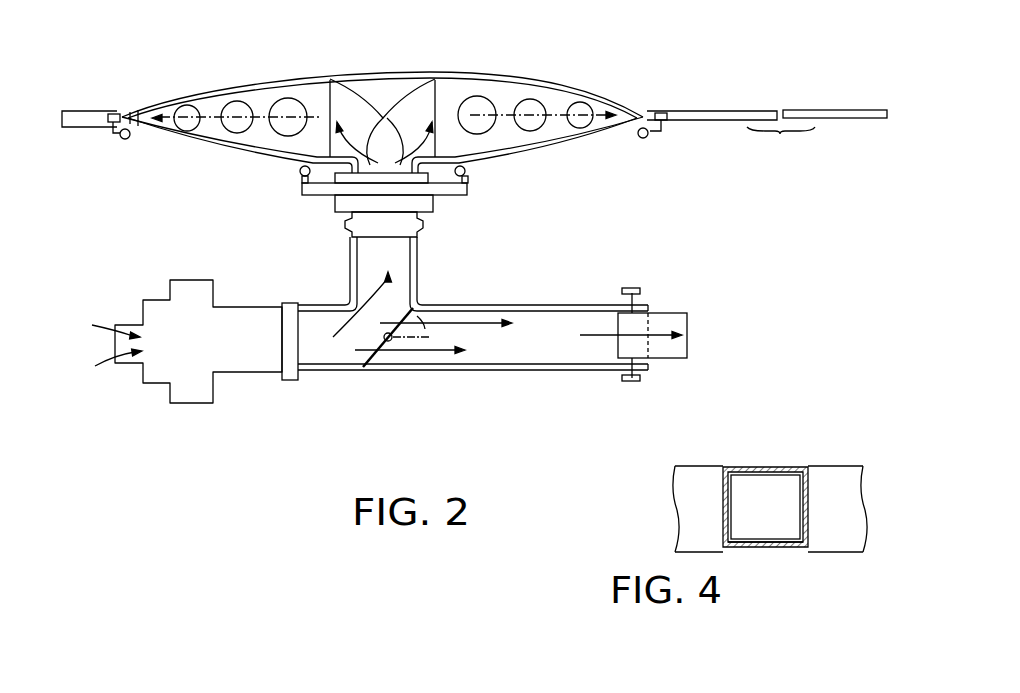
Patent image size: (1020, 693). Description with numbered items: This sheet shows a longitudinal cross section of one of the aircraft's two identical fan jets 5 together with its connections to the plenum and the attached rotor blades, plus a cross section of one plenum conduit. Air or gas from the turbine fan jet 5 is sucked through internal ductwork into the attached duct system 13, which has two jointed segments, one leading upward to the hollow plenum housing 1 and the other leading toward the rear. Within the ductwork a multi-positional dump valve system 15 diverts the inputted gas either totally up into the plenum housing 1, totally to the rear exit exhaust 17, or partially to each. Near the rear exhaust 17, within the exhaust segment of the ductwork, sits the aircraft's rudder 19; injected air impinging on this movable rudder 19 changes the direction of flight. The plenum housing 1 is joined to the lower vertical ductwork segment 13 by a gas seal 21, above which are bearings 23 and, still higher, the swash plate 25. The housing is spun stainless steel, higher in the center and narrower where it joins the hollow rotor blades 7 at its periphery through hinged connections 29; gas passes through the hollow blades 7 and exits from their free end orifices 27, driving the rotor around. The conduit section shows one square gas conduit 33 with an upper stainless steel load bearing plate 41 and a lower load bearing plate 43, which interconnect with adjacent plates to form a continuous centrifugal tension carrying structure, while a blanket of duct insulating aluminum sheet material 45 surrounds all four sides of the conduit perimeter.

In FIG. 2, the plenum housing 1 is at (489, 68).
In FIG. 2, the fan jet 5 is at (229, 322).
In FIG. 2, the rotor blade 7 is at (88, 112).
In FIG. 2, the duct system 13 is at (417, 285).
In FIG. 2, the dump valve system 15 is at (400, 347).
In FIG. 2, the rear exhaust 17 is at (687, 342).
In FIG. 2, the rudder 19 is at (635, 322).
In FIG. 2, the gas seal 21 is at (347, 232).
In FIG. 2, the bearings 23 is at (440, 205).
In FIG. 2, the swash plate 25 is at (468, 188).
In FIG. 2, the free end orifice 27 is at (857, 113).
In FIG. 2, the hinged connection 29 is at (138, 110).
In FIG. 4, the gas conduit 33 is at (742, 497).
In FIG. 4, the upper load bearing plate 41 is at (743, 465).
In FIG. 4, the lower load bearing plate 43 is at (793, 552).
In FIG. 4, the blanket duct insulating aluminum sheet material 45 is at (802, 488).